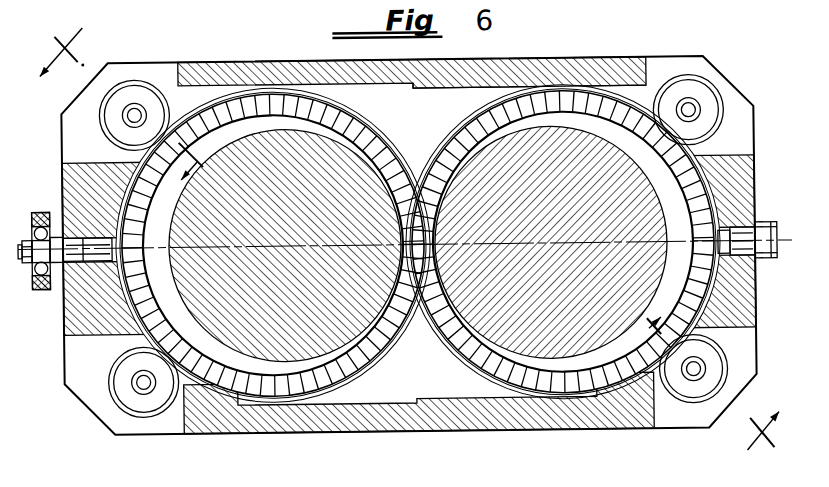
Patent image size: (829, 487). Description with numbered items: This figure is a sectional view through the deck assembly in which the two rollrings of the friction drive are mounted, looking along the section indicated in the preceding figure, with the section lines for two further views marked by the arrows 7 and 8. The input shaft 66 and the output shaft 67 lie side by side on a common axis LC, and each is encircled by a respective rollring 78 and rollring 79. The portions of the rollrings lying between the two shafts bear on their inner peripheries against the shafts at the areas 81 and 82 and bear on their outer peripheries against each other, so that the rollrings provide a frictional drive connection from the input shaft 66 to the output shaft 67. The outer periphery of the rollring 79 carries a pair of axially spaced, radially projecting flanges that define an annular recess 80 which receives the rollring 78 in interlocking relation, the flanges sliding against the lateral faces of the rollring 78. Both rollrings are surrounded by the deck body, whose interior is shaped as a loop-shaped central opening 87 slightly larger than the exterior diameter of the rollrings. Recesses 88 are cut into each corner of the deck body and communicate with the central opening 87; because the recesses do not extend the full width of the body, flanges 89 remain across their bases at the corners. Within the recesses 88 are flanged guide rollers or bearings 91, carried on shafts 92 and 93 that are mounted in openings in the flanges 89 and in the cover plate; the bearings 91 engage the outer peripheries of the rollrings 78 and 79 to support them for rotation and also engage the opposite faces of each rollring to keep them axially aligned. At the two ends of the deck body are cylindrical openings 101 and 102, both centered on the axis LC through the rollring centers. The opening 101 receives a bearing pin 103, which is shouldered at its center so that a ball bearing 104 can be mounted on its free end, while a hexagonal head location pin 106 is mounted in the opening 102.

The section line 7- 7 is at (709, 386).
The section line 8- 8 is at (121, 99).
The input shaft 66 is at (642, 206).
The output shaft 67 is at (182, 267).
The rollring 78 is at (483, 128).
The rollring 79 is at (360, 138).
The annular recess 80 is at (196, 311).
The area of engagement 81 is at (438, 234).
The area of engagement 82 is at (397, 236).
The central opening 87 is at (491, 92).
The recesses 88 is at (175, 68).
The flanges 89 is at (118, 419).
The flanged guide rollers or bearings 91 is at (132, 86).
The shafts 92 is at (135, 378).
The shafts 93 is at (135, 114).
The cylindrical opening 101 is at (92, 238).
The cylindrical opening 102 is at (725, 232).
The bearing pin 103 is at (62, 264).
The ball bearing 104 is at (49, 208).
The hexagonal head location pin 106 is at (770, 228).
The axis LC is at (616, 244).